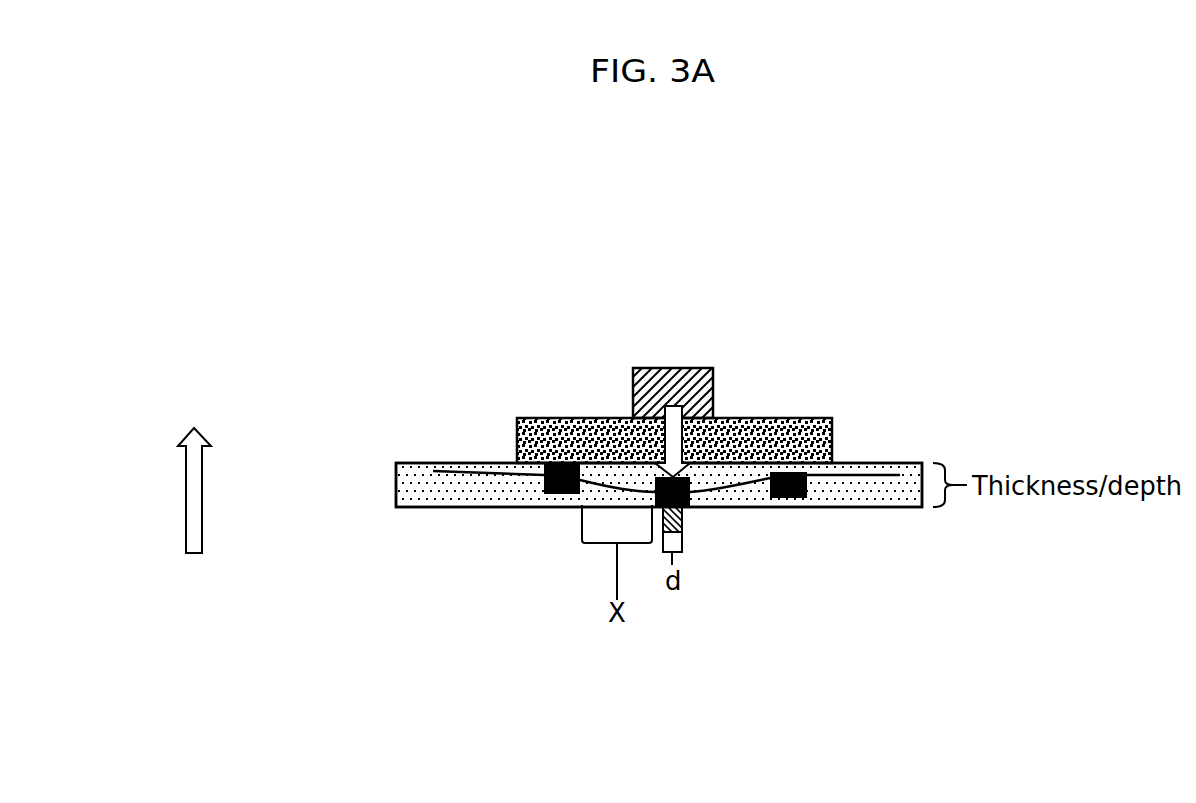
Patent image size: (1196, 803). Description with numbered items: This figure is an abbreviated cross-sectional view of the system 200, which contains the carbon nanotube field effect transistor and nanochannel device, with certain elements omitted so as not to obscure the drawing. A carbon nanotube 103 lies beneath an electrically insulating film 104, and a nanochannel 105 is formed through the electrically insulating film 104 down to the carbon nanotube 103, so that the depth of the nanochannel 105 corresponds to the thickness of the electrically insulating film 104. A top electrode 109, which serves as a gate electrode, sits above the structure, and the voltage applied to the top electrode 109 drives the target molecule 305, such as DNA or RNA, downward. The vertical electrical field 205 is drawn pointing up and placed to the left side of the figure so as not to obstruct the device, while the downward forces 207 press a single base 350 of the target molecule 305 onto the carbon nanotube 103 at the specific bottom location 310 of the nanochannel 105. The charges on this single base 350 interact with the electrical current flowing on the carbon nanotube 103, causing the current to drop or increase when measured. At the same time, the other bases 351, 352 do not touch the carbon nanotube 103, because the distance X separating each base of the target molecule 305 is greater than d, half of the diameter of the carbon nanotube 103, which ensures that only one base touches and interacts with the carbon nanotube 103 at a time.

The system 200 is at (196, 103).
The vertical electrical field 205 is at (195, 480).
The nanochannel 105 is at (368, 470).
The electrically insulating film 104 is at (519, 497).
The target molecule 305 is at (502, 470).
The downward forces 207 is at (673, 437).
The top electrode 109 is at (673, 373).
The base 351 is at (553, 463).
The single base 350 is at (660, 478).
The base 352 is at (795, 472).
The carbon nanotube 103 is at (683, 512).
The specific bottom location 310 is at (698, 516).